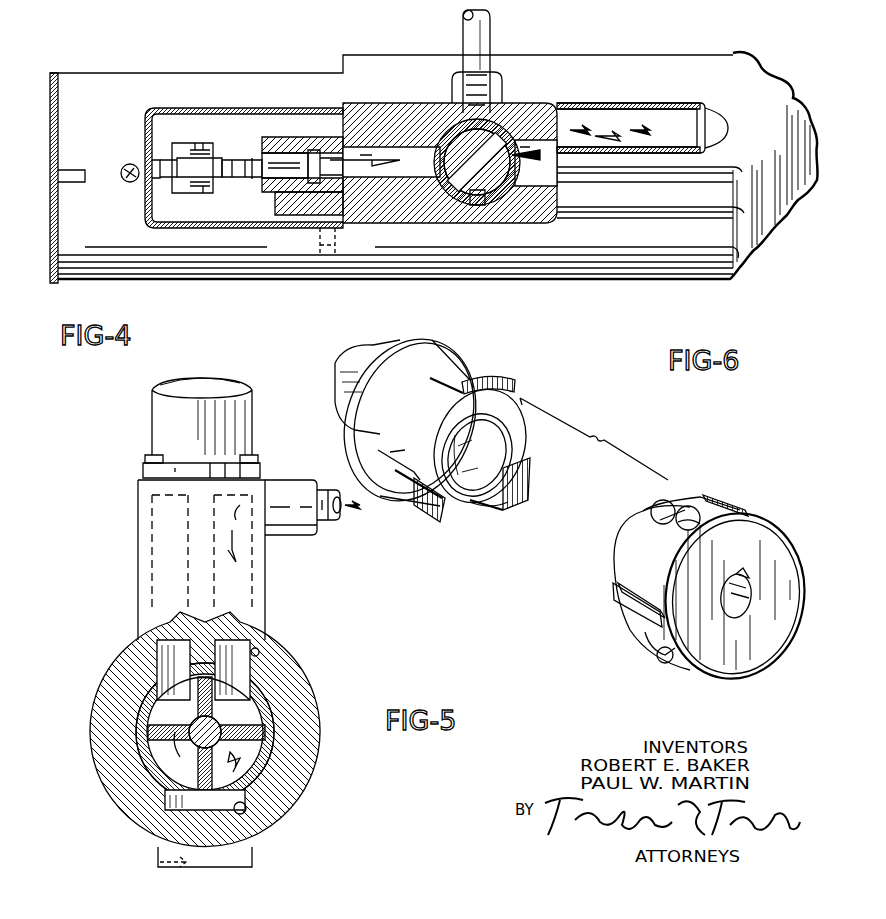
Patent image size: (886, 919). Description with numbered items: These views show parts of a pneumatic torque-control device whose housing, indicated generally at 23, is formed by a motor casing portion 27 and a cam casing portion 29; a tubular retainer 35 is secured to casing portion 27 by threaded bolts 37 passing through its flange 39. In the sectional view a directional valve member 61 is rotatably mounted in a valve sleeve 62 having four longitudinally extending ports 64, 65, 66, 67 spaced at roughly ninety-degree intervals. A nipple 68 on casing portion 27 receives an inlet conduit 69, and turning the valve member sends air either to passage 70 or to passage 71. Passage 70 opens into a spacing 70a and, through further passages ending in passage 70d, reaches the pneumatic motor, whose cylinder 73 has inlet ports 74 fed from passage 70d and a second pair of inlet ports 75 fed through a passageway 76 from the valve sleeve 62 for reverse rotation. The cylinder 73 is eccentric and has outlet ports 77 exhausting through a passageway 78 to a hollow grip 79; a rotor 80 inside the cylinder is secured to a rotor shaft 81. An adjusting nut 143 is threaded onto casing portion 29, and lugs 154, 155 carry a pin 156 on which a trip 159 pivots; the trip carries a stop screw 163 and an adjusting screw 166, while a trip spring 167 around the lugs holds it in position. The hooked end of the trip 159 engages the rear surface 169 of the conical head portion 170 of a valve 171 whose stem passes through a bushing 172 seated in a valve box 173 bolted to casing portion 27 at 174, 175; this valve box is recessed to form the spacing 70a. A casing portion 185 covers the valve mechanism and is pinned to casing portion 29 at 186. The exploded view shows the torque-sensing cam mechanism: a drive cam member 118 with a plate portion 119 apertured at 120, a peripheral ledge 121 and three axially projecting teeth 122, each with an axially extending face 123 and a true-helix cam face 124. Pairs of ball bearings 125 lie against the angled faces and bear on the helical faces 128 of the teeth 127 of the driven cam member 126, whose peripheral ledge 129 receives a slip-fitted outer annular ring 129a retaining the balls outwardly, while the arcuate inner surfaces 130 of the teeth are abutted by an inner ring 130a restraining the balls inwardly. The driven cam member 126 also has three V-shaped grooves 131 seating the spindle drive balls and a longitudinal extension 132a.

In FIG. 4, the housing assembly 23 is at (641, 57).
In FIG. 4, the casing portion 27 is at (705, 58).
In FIG. 5, the casing portion 27 is at (318, 735).
In FIG. 4, the casing portion 29 is at (100, 83).
In FIG. 5, the retainer 35 is at (245, 428).
In FIG. 5, the threaded bolts 37 is at (256, 455).
In FIG. 5, the flange 39 is at (257, 470).
In FIG. 4, the directional valve member 61 is at (470, 205).
In FIG. 4, the valve sleeve 62 is at (555, 108).
In FIG. 4, the port 64 is at (450, 185).
In FIG. 4, the port 65 is at (477, 205).
In FIG. 4, the port 66 is at (515, 200).
In FIG. 4, the port 67 is at (505, 100).
In FIG. 4, the nipple 68 is at (495, 75).
In FIG. 5, the nipple 68 is at (302, 535).
In FIG. 4, the inlet conduit 69 is at (476, 20).
In FIG. 5, the inlet conduit 69 is at (330, 520).
In FIG. 4, the passage 70 is at (400, 205).
In FIG. 4, the spacing 70a is at (328, 282).
In FIG. 4, the passage 70d is at (660, 128).
In FIG. 5, the passage 70d is at (258, 652).
In FIG. 4, the passage 71 is at (606, 140).
In FIG. 5, the cylinder 73 is at (272, 765).
In FIG. 5, the inlet ports 74 is at (250, 685).
In FIG. 5, the second pair of inlet ports 75 is at (185, 690).
In FIG. 4, the passageway 76 is at (718, 192).
In FIG. 5, the passageway 76 is at (165, 657).
In FIG. 5, the outlet ports 77 is at (185, 805).
In FIG. 5, the passageway 78 is at (272, 818).
In FIG. 5, the hollow grip 79 is at (252, 850).
In FIG. 5, the rotor 80 is at (260, 710).
In FIG. 5, the rotor shaft 81 is at (180, 760).
In FIG. 6, the drive cam member 118 is at (752, 490).
In FIG. 6, the plate portion 119 is at (785, 515).
In FIG. 6, the aperture 120 is at (745, 605).
In FIG. 6, the peripheral ledge 121 is at (652, 628).
In FIG. 6, the teeth 122 is at (613, 590).
In FIG. 6, the axially extending face 123 is at (703, 492).
In FIG. 6, the cam face 124 is at (672, 525).
In FIG. 6, the ball bearings 125 is at (668, 500).
In FIG. 6, the driven cam member 126 is at (515, 378).
In FIG. 6, the teeth 127 is at (516, 386).
In FIG. 6, the faces 128 is at (445, 378).
In FIG. 6, the peripheral ledge 129 is at (402, 478).
In FIG. 6, the outer annular ring 129a is at (748, 512).
In FIG. 6, the inner surfaces 130 is at (488, 505).
In FIG. 6, the inner ring 130a is at (695, 500).
In FIG. 6, the V-shaped grooves 131 is at (478, 495).
In FIG. 6, the longitudinal extension 132a is at (382, 355).
In FIG. 4, the adjusting nut 143 is at (50, 73).
In FIG. 4, the lug 154 is at (212, 145).
In FIG. 4, the lug 155 is at (172, 190).
In FIG. 4, the pin 156 is at (199, 143).
In FIG. 4, the trip 159 is at (243, 178).
In FIG. 4, the screw 163 is at (152, 165).
In FIG. 4, the adjusting screw 166 is at (262, 137).
In FIG. 4, the trip spring 167 is at (160, 228).
In FIG. 4, the rear surface 169 is at (258, 222).
In FIG. 4, the conical head portion 170 is at (260, 160).
In FIG. 4, the valve 171 is at (325, 150).
In FIG. 4, the bushing 172 is at (280, 215).
In FIG. 4, the valve box 173 is at (312, 150).
In FIG. 4, the bolting point 174 is at (330, 150).
In FIG. 4, the bolting point 175 is at (332, 290).
In FIG. 4, the casing portion 185 is at (206, 228).
In FIG. 4, the pin connection 186 is at (121, 175).